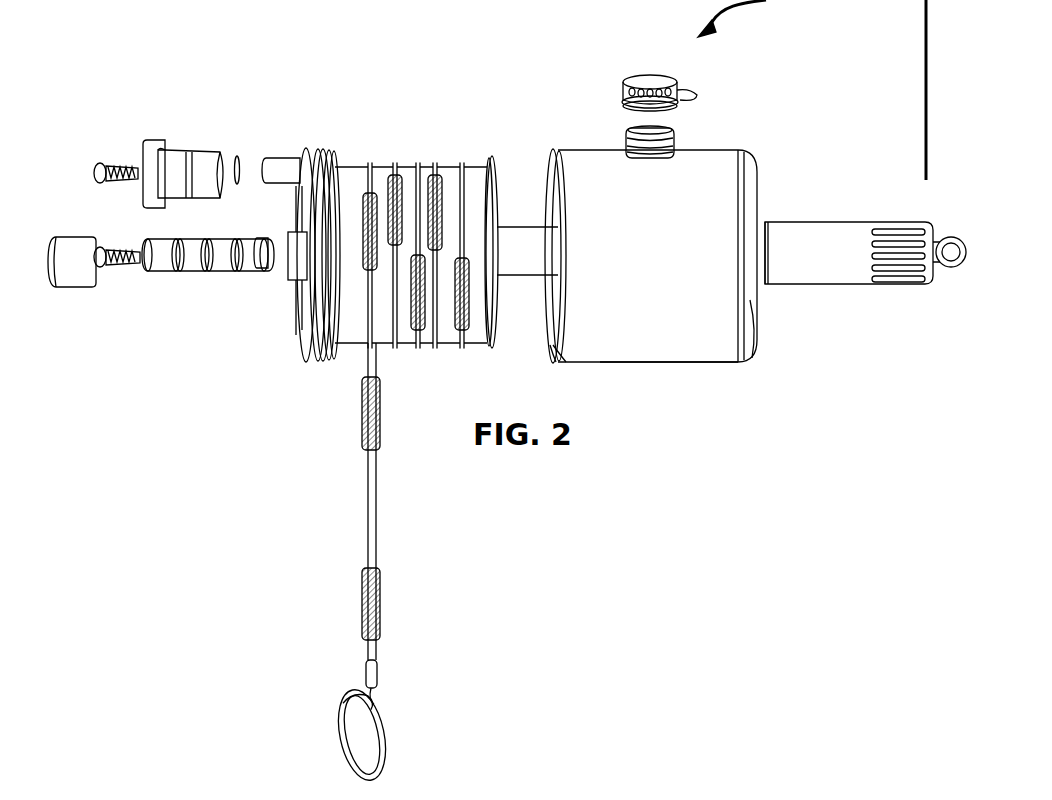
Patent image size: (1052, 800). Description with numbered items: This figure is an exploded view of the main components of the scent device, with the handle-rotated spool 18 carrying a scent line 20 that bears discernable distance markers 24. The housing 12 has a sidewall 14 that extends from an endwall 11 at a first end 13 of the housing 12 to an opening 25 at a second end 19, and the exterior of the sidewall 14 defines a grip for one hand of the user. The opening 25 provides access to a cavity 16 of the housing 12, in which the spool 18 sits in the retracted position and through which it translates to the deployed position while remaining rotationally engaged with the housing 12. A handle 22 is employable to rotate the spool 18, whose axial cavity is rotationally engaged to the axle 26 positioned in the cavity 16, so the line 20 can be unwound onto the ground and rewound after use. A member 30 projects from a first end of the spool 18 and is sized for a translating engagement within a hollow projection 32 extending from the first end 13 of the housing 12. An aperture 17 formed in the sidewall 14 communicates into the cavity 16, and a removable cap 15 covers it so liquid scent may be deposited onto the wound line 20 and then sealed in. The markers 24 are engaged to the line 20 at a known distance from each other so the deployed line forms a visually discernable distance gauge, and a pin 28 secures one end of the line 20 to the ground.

The endwall 11 is at (782, 162).
The housing 12 is at (667, 363).
The first end 13 is at (757, 356).
The sidewall 14 is at (645, 256).
The removable cap 15 is at (640, 76).
The cavity 16 is at (553, 352).
The aperture 17 is at (647, 128).
The spool 18 is at (340, 176).
The second end 19 is at (553, 360).
The scent line 20 is at (376, 358).
The handle 22 is at (216, 148).
The markers 24 is at (400, 182).
The opening 25 is at (546, 168).
The axle 26 is at (203, 271).
The pin 28 is at (891, 90).
The member 30 is at (540, 233).
The hollow projection 32 is at (826, 232).